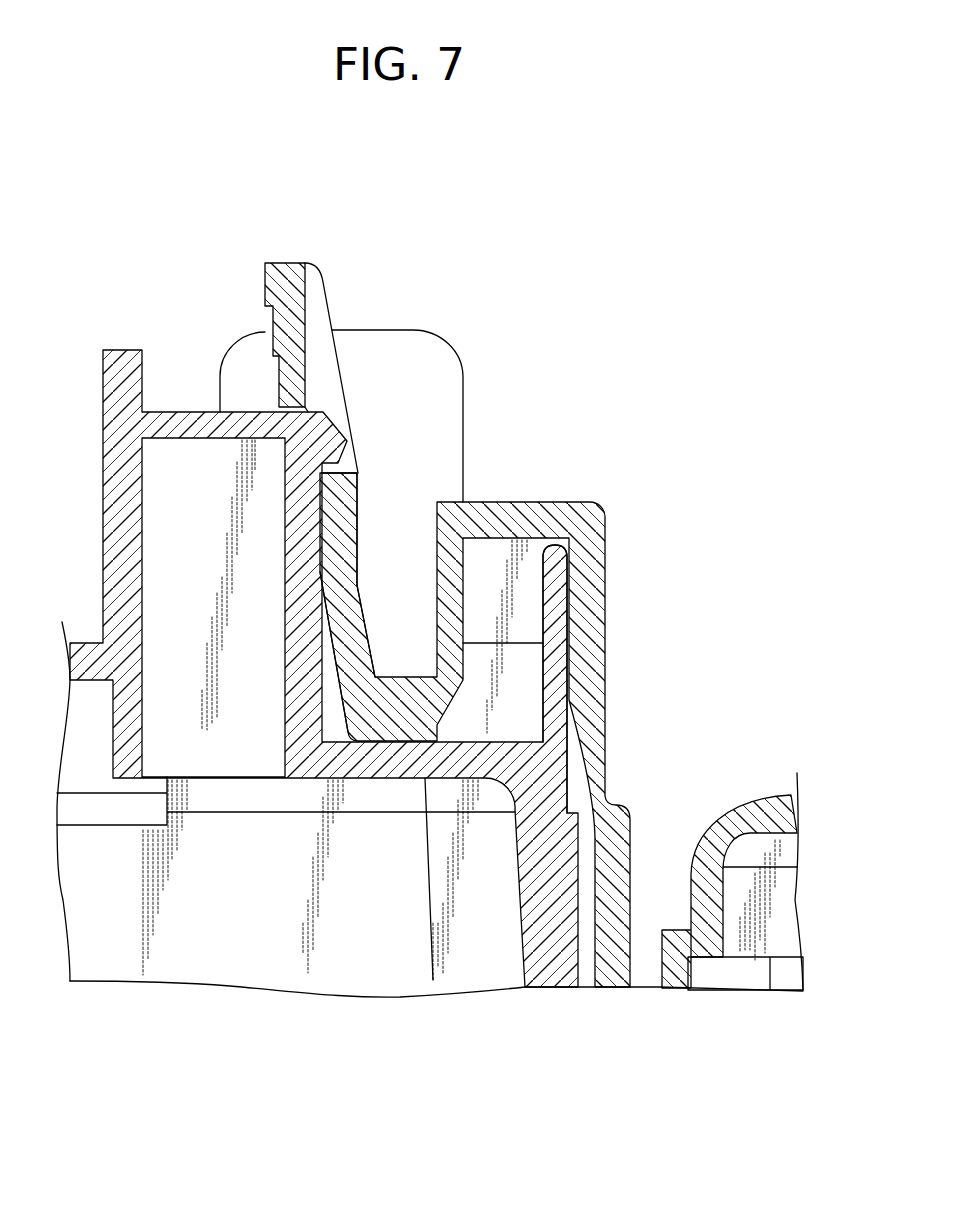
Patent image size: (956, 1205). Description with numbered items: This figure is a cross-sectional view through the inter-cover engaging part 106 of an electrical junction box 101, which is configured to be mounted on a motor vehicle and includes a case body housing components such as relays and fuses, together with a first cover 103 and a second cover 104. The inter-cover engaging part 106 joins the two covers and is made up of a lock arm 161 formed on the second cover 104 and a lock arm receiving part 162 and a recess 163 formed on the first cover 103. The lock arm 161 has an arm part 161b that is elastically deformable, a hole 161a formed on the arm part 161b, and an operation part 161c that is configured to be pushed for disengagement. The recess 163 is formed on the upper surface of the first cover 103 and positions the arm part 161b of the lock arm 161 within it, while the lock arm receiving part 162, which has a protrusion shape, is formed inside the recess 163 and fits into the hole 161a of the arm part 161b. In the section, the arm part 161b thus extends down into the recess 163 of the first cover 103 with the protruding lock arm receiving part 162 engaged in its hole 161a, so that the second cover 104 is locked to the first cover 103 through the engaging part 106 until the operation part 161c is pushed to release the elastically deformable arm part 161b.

The electrical junction box 101 is at (674, 255).
The first cover 103 is at (83, 630).
The second cover 104 is at (772, 786).
The inter-cover engaging part 106 is at (459, 322).
The lock arm 161 is at (367, 499).
The hole 161a is at (350, 468).
The arm part 161b is at (365, 613).
The operation part 161c is at (266, 320).
The lock arm receiving part 162 is at (345, 430).
The recess 163 is at (520, 743).